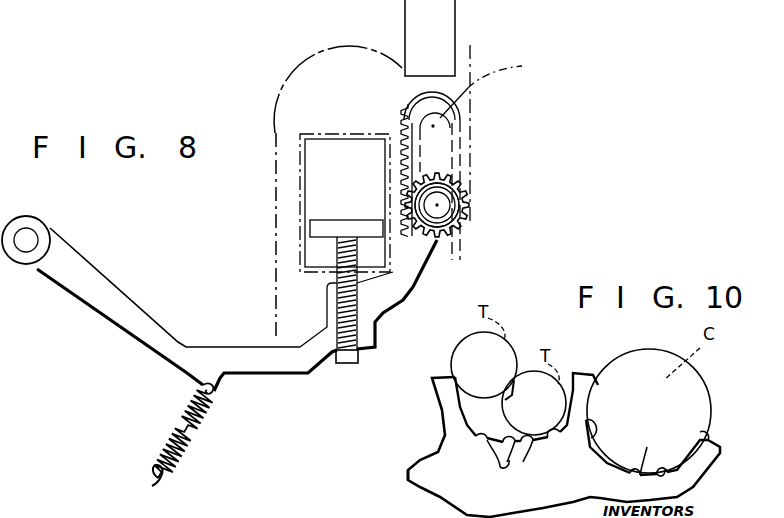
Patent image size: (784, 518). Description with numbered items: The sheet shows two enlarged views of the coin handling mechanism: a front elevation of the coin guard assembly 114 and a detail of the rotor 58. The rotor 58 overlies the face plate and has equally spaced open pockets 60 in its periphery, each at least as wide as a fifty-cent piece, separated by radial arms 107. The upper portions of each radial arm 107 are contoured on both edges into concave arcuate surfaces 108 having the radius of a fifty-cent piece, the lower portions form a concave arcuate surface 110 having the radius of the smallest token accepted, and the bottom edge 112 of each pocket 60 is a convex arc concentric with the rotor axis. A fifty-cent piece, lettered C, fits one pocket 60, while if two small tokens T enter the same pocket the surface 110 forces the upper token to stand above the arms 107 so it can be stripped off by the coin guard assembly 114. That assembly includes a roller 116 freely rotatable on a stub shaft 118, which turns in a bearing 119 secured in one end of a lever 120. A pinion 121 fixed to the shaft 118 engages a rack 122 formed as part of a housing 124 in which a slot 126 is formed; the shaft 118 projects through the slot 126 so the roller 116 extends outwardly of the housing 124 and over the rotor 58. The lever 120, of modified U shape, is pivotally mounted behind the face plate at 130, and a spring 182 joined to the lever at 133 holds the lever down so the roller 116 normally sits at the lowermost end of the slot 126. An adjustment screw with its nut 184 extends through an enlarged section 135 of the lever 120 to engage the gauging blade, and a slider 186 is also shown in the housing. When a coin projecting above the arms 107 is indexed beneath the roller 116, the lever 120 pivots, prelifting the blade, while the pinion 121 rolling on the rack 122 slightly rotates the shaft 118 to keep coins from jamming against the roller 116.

In FIG. 8, the coin guard assembly 114 is at (401, 73).
In FIG. 8, the housing 124 is at (412, 106).
In FIG. 8, the slot 126 is at (491, 92).
In FIG. 8, the rack 122 is at (424, 138).
In FIG. 8, the pinion 121 is at (424, 180).
In FIG. 8, the slider 186 is at (312, 232).
In FIG. 8, the stub shaft 118 is at (437, 205).
In FIG. 8, the roller 116 is at (408, 196).
In FIG. 8, the bearing 119 is at (439, 281).
In FIG. 8, the lever 120 is at (207, 347).
In FIG. 8, the pivot mounting 130 is at (35, 234).
In FIG. 8, the enlarged section 135 is at (327, 300).
In FIG. 8, the nut 184 is at (347, 363).
In FIG. 8, the spring attachment point 133 is at (203, 390).
In FIG. 8, the tension spring 182 is at (183, 447).
In FIG. 10, the radial arms 107 is at (440, 420).
In FIG. 10, the concave arcuate surfaces 108 is at (457, 375).
In FIG. 10, the concave arcuate surface 110 is at (478, 442).
In FIG. 10, the bottom edge 112 is at (581, 450).
In FIG. 10, the pockets 60 is at (647, 472).
In FIG. 10, the rotor 58 is at (427, 474).